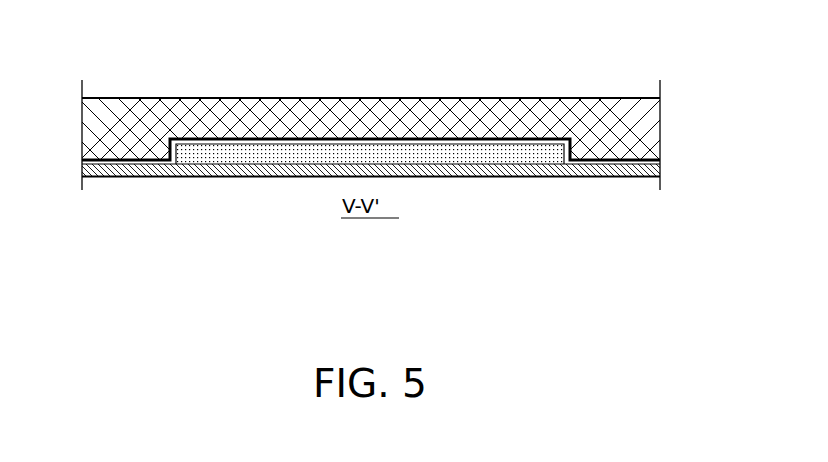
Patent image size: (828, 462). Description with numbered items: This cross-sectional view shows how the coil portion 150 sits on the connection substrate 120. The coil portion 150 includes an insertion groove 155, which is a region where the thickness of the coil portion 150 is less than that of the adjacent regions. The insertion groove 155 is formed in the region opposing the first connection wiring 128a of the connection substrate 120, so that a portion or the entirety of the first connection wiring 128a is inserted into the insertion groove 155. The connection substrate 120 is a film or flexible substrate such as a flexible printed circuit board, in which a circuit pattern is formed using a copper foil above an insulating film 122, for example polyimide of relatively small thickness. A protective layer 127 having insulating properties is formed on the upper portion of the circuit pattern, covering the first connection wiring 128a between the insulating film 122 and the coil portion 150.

The coil portion 150 is at (530, 99).
The insertion groove 155 is at (552, 147).
The first connection wiring 128a is at (200, 161).
The protective layer 127 is at (247, 158).
The insulating film 122 is at (295, 178).
The connection substrate 120 is at (498, 177).